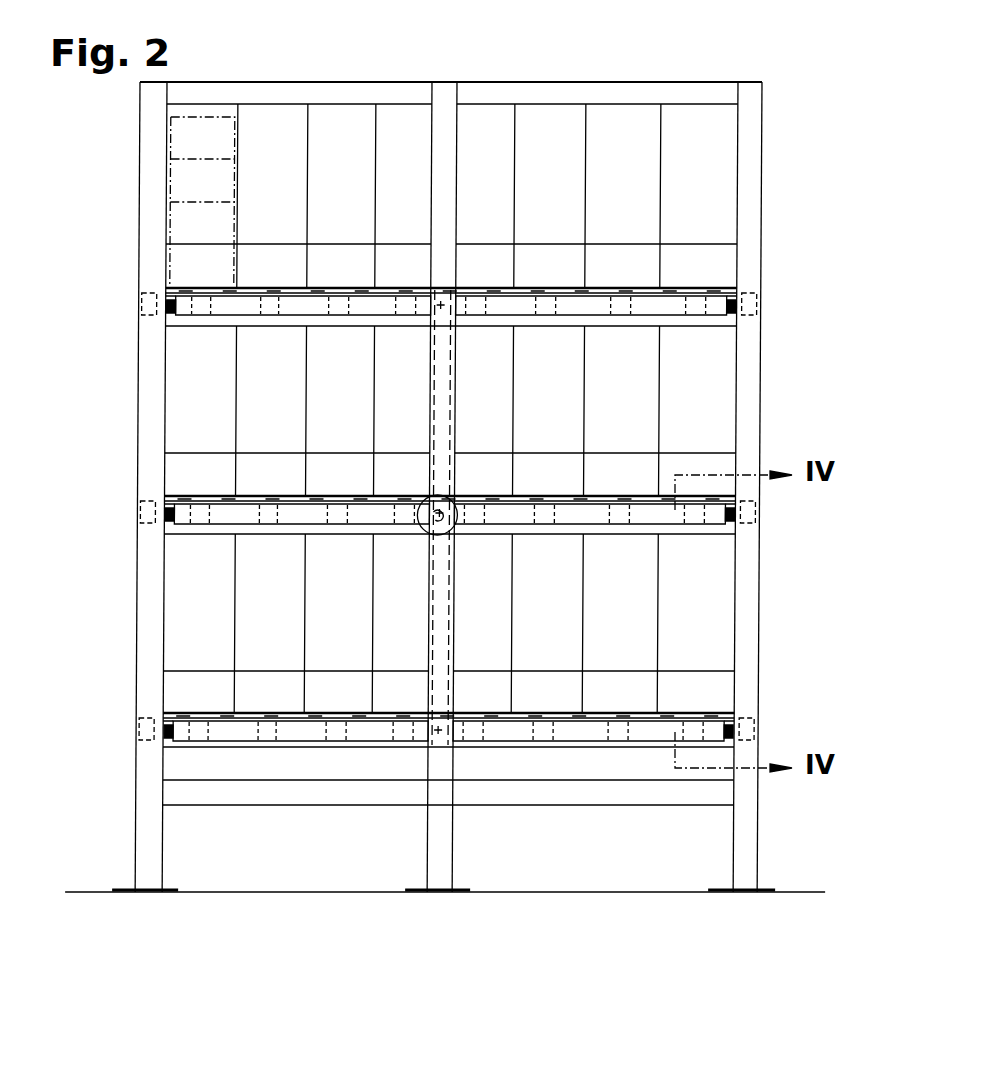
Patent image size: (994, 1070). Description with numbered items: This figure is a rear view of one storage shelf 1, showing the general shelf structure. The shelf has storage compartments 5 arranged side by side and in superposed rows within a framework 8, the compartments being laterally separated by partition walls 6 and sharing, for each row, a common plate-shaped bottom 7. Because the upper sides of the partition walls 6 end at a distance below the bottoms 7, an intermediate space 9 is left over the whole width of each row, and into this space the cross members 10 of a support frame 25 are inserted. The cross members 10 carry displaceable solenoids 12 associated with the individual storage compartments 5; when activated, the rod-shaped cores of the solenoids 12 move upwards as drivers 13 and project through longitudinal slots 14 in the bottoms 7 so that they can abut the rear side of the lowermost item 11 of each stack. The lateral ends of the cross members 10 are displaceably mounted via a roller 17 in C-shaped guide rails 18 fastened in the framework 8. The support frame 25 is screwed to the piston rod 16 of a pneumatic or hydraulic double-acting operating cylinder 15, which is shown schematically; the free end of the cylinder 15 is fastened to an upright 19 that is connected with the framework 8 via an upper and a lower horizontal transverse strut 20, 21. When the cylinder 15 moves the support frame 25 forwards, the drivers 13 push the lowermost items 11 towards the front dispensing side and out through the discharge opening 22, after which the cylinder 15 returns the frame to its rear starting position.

The storage shelf 1 is at (285, 80).
The storage compartments 5 is at (622, 195).
The partition walls 6 is at (587, 170).
The bottom 7 is at (723, 285).
The framework 8 is at (210, 97).
The intermediate space 9 is at (703, 318).
The cross members 10 is at (645, 307).
The items 11 is at (183, 174).
The solenoids 12 is at (273, 311).
The drivers 13 is at (168, 288).
The longitudinal slots 14 is at (193, 287).
The operating cylinders 15 is at (417, 517).
The piston rod 16 is at (462, 525).
The roller 17 is at (145, 305).
The guide rails 18 is at (190, 311).
The upright 19 is at (428, 835).
The upper horizontal transverse strut 20 is at (443, 95).
The lower horizontal transverse strut 21 is at (440, 792).
The discharge opening 22 is at (707, 277).
The support frame 25 is at (440, 617).